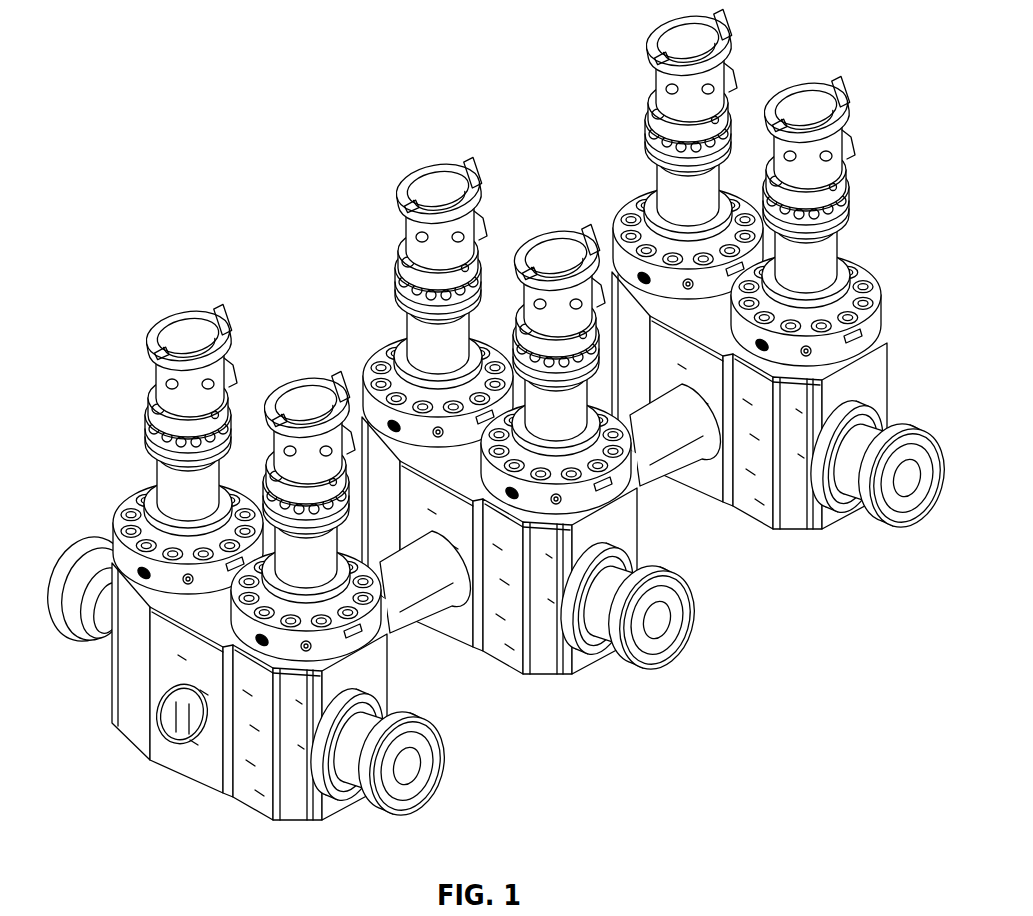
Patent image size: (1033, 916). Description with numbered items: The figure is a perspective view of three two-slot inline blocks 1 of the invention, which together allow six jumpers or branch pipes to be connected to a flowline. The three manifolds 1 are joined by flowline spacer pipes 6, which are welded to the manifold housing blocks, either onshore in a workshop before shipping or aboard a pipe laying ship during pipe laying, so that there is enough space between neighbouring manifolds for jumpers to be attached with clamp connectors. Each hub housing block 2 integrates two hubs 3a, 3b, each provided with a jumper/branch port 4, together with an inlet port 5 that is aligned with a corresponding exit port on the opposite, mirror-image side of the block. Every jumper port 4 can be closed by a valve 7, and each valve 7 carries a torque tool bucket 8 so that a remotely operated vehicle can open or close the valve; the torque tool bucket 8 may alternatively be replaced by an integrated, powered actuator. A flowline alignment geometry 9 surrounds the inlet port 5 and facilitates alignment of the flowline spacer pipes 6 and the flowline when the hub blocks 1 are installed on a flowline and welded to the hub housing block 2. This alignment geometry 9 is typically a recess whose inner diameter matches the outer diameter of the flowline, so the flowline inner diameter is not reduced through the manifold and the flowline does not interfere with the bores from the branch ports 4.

The 2-slot inline block 1 is at (492, 438).
The hub housing block 2 is at (240, 706).
The hub 3a is at (88, 546).
The hub 3b is at (915, 431).
The jumper/branch port 4 is at (413, 771).
The inlet port 5 is at (170, 736).
The flowline spacer pipe 6 is at (657, 466).
The valve 7 is at (850, 227).
The torque tool bucket 8 is at (408, 171).
The flowline alignment geometry 9 is at (160, 717).